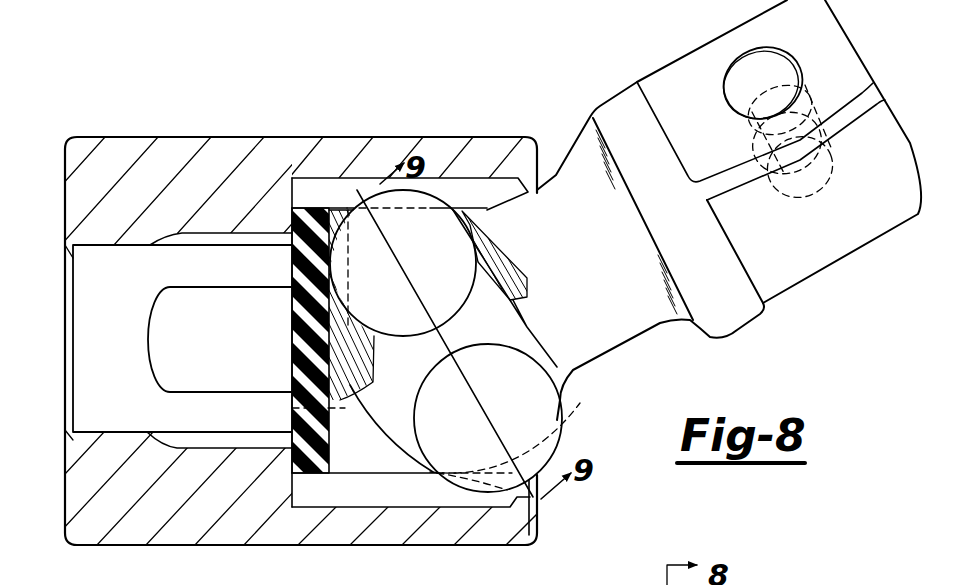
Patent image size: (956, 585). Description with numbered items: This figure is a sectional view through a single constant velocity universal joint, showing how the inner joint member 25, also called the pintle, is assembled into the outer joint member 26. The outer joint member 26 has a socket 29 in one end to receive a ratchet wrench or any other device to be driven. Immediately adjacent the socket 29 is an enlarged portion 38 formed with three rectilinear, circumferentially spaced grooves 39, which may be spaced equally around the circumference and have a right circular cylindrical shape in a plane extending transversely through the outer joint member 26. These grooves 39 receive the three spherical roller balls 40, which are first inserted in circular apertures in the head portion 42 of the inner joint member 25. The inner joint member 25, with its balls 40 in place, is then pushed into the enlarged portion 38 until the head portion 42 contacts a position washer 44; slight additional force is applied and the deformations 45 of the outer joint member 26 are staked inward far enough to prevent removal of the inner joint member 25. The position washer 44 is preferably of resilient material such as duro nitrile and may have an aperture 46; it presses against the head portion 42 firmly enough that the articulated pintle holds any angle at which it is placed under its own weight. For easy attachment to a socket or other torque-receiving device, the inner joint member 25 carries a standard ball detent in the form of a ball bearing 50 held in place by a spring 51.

The inner joint member 25 is at (602, 92).
The outer joint member 26 is at (270, 96).
The socket 29 is at (70, 450).
The enlarged portion 38 is at (292, 466).
The grooves 39 is at (330, 176).
The spherical roller balls 40 is at (432, 228).
The head portion 42 is at (370, 440).
The position washer 44 is at (322, 452).
The deformations 45 is at (548, 160).
The aperture 46 is at (345, 263).
The ball bearing 50 is at (780, 97).
The spring 51 is at (818, 80).